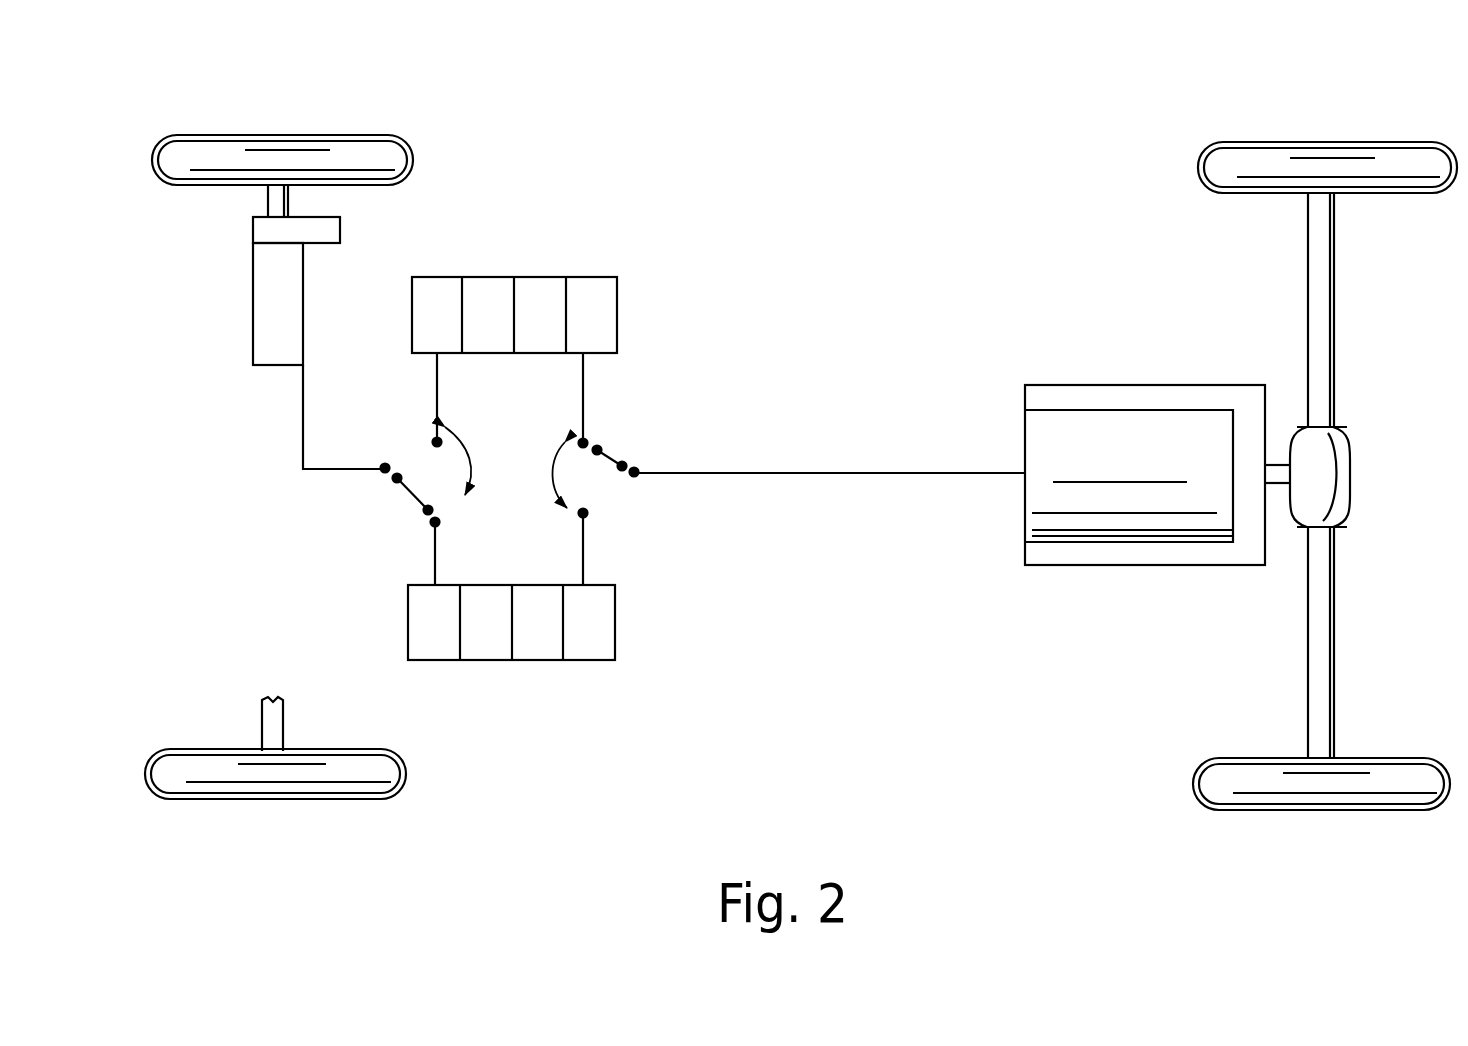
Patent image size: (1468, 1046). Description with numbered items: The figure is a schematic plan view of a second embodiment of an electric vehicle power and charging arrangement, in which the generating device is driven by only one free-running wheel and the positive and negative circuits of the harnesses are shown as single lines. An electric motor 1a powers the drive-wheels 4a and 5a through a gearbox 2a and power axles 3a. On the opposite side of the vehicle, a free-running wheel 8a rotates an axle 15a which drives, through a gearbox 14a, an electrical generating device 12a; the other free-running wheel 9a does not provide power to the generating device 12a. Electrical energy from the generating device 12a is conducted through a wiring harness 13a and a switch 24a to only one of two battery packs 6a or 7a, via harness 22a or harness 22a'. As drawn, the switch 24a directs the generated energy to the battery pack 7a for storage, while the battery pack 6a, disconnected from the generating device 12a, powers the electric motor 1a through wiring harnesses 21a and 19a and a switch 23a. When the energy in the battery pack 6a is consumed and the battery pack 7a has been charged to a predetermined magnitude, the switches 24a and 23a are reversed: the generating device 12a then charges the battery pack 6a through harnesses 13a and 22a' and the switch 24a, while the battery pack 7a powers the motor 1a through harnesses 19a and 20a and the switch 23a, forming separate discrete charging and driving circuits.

The electric motor 1a is at (1125, 437).
The gearbox 2a is at (1323, 483).
The power axles 3a is at (1322, 325).
The drive-wheel 4a is at (1347, 177).
The drive-wheel 5a is at (1348, 788).
The battery pack 6a is at (525, 300).
The battery pack 7a is at (522, 638).
The free-running wheel 8a is at (357, 150).
The free-running wheel 9a is at (363, 773).
The electrical generating device 12a is at (270, 318).
The wiring harness 13a is at (298, 430).
The gearbox 14a is at (258, 232).
The axle 15a is at (263, 197).
The wiring harness 19a is at (898, 471).
The wiring harness 20a is at (590, 562).
The wiring harness 21a is at (589, 403).
The wiring harness 22a is at (367, 535).
The wiring harness 22a' is at (488, 400).
The switch 23a is at (600, 500).
The switch 24a is at (448, 505).